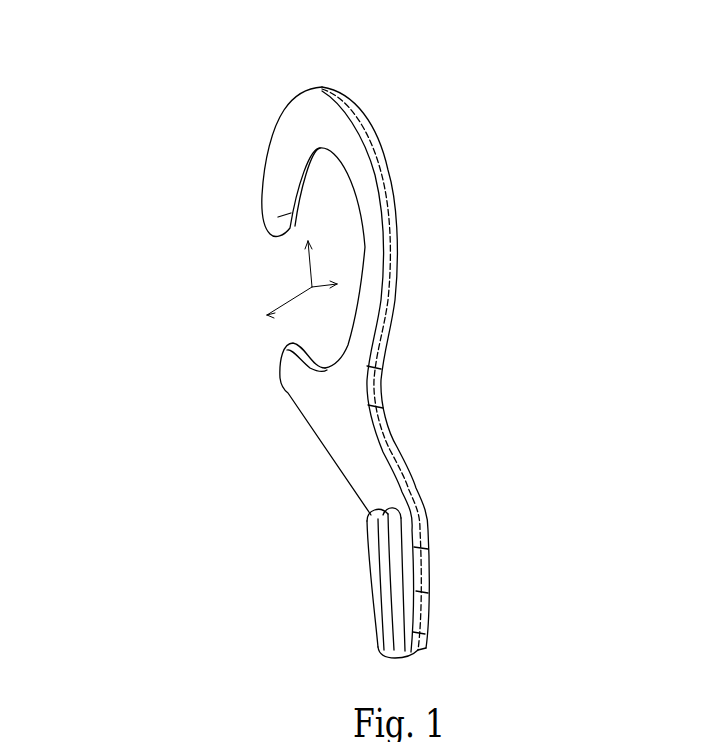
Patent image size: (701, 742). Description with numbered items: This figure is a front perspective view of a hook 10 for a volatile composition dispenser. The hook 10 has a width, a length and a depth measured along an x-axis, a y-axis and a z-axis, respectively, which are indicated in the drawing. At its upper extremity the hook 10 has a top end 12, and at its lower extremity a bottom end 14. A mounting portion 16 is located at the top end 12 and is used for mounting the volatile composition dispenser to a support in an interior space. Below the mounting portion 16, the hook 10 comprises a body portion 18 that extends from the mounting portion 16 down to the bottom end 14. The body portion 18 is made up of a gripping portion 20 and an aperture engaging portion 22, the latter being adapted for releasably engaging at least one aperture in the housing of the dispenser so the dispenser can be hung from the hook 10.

The hook 10 is at (442, 121).
The top end 12 is at (318, 92).
The bottom end 14 is at (418, 652).
The mounting portion 16 is at (399, 208).
The body portion 18 is at (148, 355).
The gripping portion 20 is at (303, 388).
The aperture engaging portion 22 is at (372, 575).